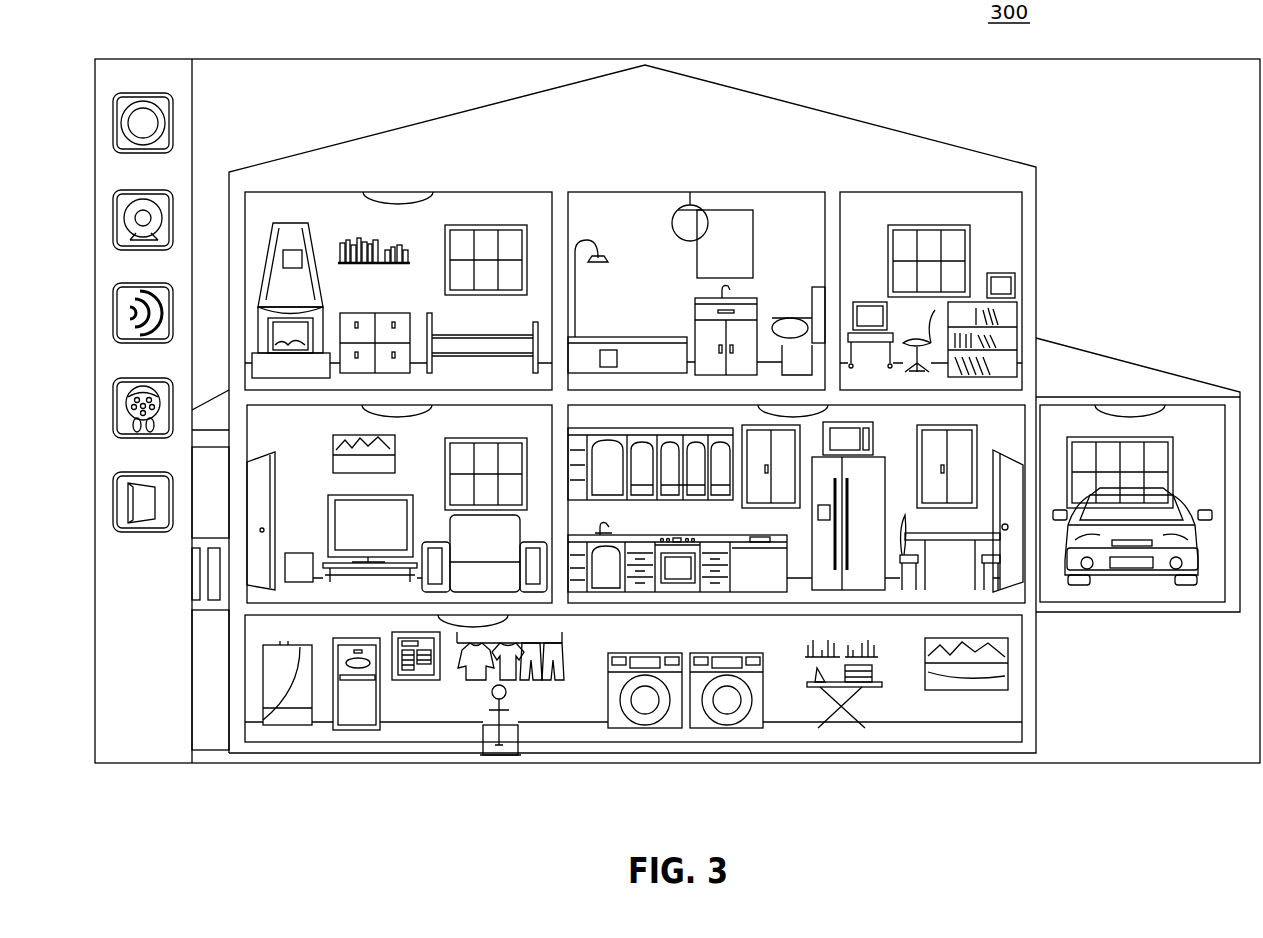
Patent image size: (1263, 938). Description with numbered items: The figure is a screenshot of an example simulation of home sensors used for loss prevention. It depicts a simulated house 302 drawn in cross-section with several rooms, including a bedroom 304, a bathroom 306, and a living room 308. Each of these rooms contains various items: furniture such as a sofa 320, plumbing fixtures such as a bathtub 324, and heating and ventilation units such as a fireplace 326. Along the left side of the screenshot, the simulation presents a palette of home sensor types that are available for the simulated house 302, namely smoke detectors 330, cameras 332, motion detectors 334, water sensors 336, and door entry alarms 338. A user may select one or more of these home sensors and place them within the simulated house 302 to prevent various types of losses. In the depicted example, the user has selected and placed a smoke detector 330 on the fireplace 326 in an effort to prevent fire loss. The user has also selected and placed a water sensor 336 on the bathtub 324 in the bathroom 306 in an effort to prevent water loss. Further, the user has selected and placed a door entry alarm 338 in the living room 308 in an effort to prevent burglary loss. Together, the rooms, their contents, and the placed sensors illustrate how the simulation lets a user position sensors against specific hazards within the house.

The simulated house 302 is at (903, 130).
The bedroom 304 is at (482, 192).
The bathroom 306 is at (742, 192).
The living room 308 is at (324, 603).
The sofa 320 is at (446, 527).
The bathtub 324 is at (597, 337).
The fireplace 326 is at (318, 300).
The smoke detector 330 is at (113, 108).
The camera 332 is at (113, 205).
The motion detector 334 is at (113, 308).
The water sensor 336 is at (113, 409).
The door entry alarm 338 is at (113, 493).